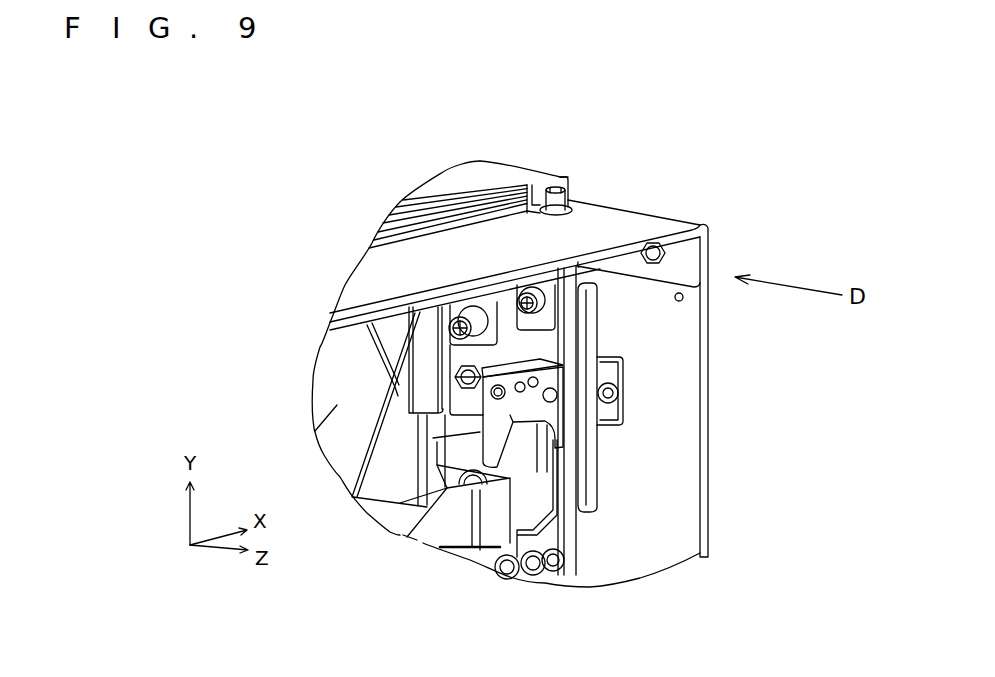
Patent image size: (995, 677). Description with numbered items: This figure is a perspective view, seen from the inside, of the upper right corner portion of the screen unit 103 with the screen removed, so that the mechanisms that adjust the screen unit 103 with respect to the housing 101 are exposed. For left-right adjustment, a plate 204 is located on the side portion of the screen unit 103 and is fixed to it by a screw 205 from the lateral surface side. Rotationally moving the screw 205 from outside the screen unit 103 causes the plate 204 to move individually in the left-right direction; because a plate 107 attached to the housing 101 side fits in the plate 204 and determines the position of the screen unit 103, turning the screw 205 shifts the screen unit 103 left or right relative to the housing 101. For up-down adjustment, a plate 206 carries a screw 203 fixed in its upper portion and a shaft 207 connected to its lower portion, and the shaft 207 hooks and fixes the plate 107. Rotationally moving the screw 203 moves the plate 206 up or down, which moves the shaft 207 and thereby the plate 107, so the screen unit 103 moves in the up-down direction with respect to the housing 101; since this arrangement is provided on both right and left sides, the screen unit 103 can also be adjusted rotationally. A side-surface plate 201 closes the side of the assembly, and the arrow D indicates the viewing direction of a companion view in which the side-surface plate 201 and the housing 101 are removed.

The housing 101 is at (437, 183).
The screen unit 103 is at (383, 260).
The plate 107 is at (520, 507).
The side-surface plate 201 is at (660, 308).
The screw 203 is at (552, 188).
The plate 204 is at (492, 428).
The screw 205 is at (548, 368).
The plate 206 is at (590, 495).
The shaft 207 is at (507, 577).